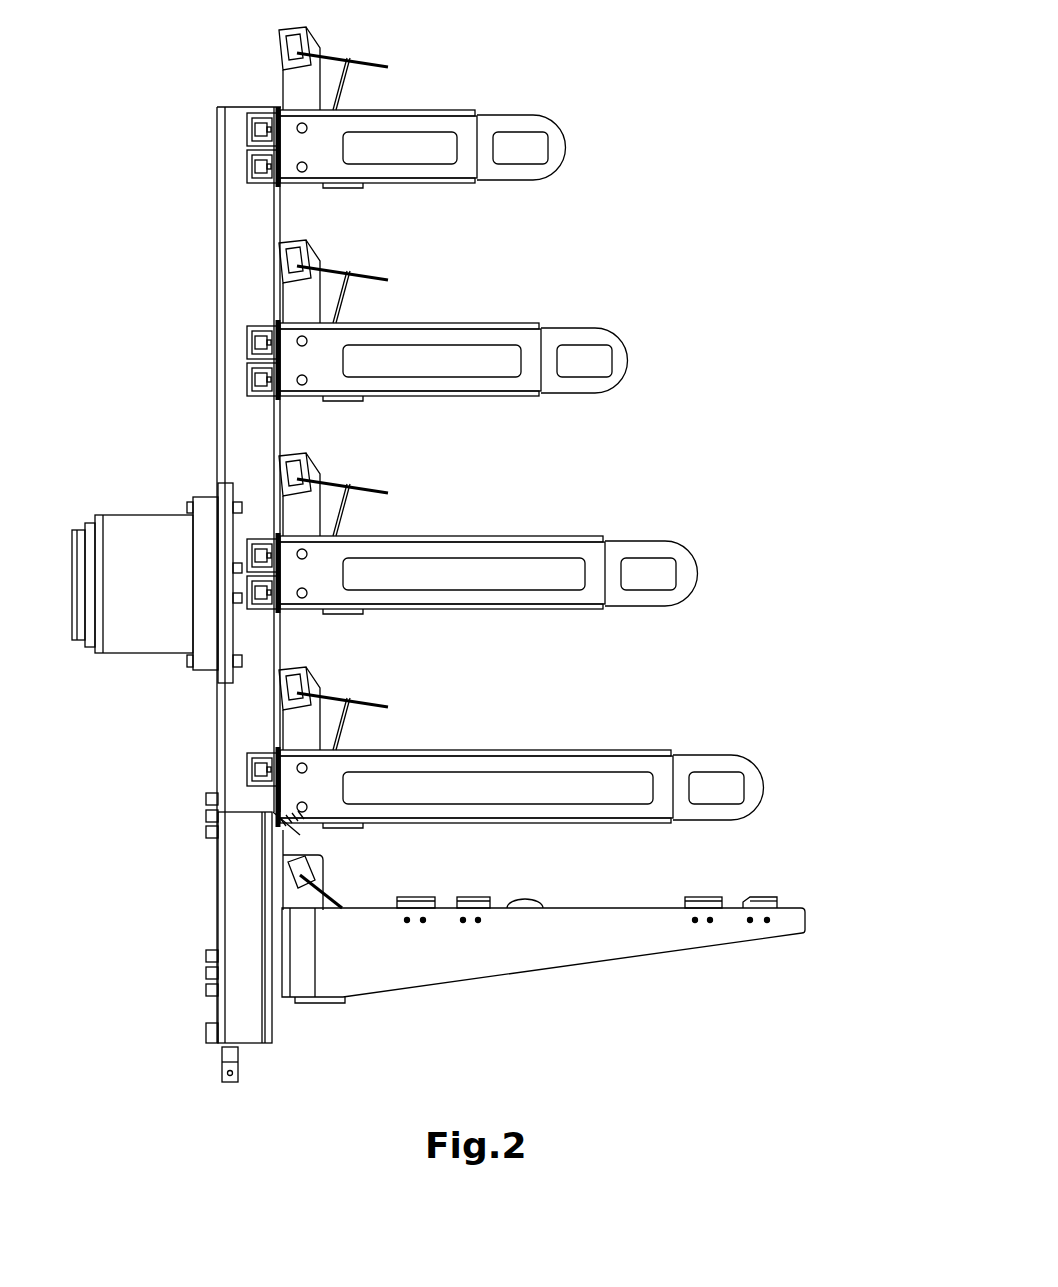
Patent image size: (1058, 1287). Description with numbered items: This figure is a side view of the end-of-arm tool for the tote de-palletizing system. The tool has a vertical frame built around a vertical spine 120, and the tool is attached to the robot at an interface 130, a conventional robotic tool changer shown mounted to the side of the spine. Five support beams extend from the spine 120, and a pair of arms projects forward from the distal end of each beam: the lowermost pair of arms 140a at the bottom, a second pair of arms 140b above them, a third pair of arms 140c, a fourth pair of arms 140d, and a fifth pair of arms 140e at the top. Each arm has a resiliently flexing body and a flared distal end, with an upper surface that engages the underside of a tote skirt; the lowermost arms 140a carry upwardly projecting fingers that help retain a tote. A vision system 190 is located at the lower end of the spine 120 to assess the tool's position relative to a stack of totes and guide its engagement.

The vertical spine 120 is at (227, 255).
The interface 130 is at (130, 600).
The lowermost pair of arms 140a is at (813, 920).
The second pair of arms 140b is at (795, 783).
The third pair of arms 140c is at (777, 568).
The fourth pair of arms 140d is at (753, 355).
The fifth pair of arms 140e is at (753, 150).
The vision system 190 is at (195, 1072).